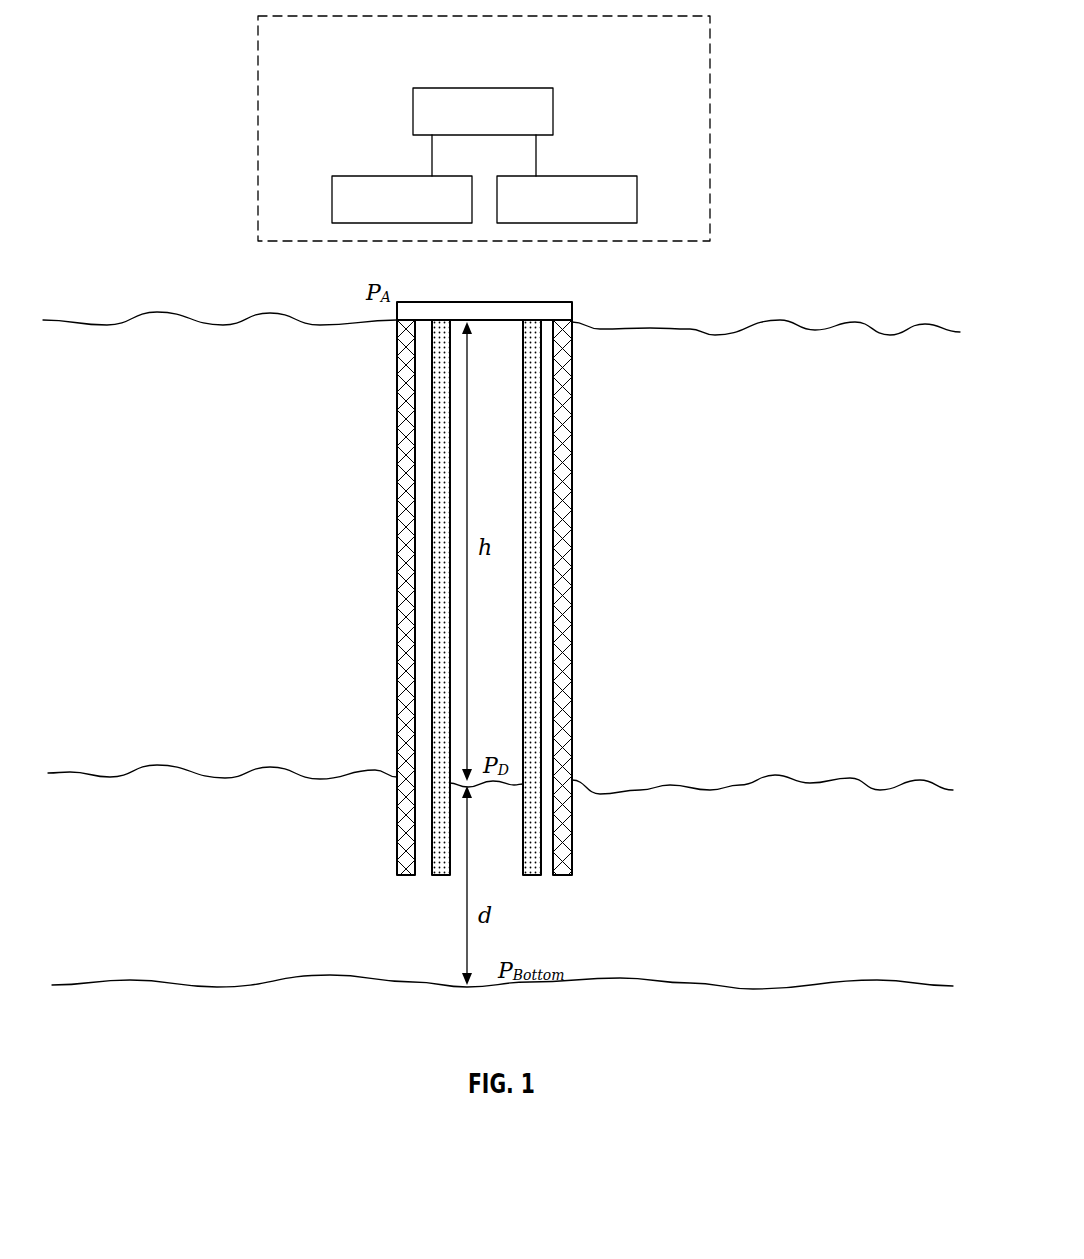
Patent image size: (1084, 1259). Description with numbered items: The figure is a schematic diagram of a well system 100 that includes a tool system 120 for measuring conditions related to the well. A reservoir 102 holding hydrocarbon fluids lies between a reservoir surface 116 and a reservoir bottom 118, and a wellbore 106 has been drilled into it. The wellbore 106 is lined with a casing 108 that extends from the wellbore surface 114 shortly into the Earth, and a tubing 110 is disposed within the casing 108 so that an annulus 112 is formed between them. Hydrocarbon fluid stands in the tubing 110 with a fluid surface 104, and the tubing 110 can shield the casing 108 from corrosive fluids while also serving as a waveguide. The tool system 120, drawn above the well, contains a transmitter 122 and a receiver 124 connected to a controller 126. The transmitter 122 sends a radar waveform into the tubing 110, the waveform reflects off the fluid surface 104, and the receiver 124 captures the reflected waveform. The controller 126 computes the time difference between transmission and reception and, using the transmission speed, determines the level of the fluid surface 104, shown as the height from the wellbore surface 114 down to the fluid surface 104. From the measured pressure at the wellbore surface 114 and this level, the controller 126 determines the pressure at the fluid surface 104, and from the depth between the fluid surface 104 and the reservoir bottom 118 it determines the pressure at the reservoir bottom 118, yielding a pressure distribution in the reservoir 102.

The well system 100 is at (770, 1077).
The reservoir 102 is at (803, 798).
The fluid surface 104 is at (498, 790).
The wellbore 106 is at (484, 618).
The casing 108 is at (560, 443).
The tubing 110 is at (530, 720).
The annulus 112 is at (547, 532).
The wellbore surface 114 is at (855, 323).
The reservoir surface 116 is at (872, 782).
The reservoir bottom 118 is at (767, 988).
The tool system 120 is at (708, 92).
The transmitter 122 is at (357, 178).
The receiver 124 is at (623, 176).
The controller 126 is at (542, 88).